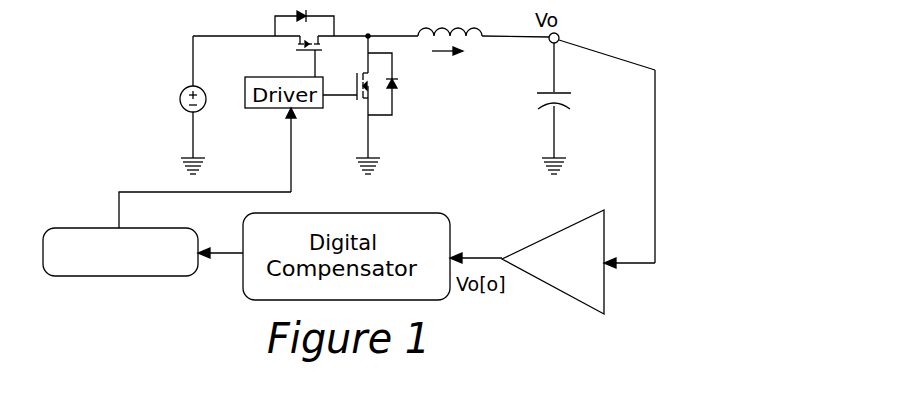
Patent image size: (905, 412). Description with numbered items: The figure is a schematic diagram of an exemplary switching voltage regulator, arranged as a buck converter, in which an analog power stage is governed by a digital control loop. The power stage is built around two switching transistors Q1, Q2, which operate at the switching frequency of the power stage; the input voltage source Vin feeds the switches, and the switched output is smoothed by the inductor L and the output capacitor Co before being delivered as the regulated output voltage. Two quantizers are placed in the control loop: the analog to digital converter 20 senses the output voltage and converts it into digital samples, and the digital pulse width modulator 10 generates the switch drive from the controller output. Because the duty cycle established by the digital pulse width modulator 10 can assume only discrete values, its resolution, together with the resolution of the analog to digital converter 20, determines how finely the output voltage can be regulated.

The digital pulse width modulator 10 is at (82, 281).
The analog to digital converter 20 is at (587, 314).
The input voltage source Vin is at (178, 105).
The power stage switch Q1 is at (295, 43).
The power stage switch Q2 is at (360, 104).
The output inductor L is at (450, 46).
The output capacitor Co is at (535, 108).